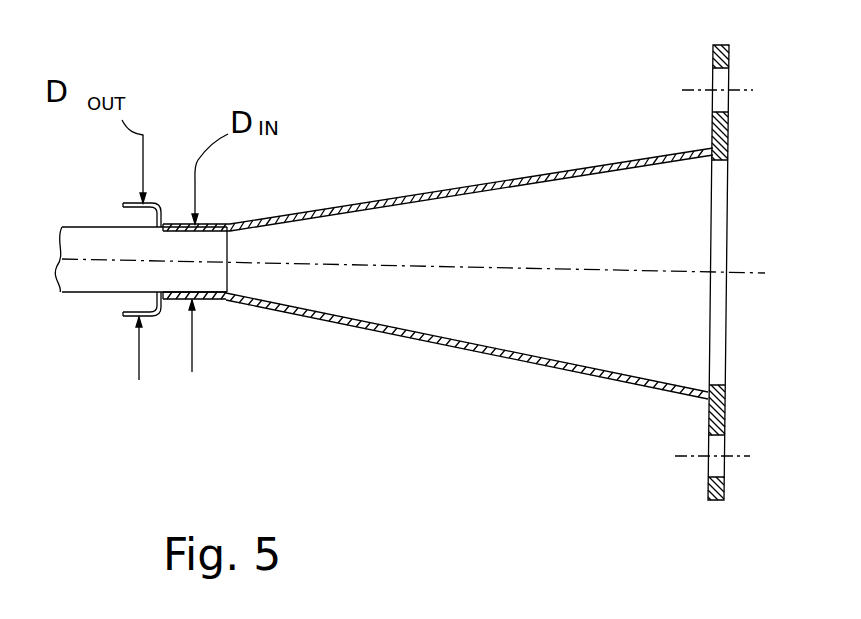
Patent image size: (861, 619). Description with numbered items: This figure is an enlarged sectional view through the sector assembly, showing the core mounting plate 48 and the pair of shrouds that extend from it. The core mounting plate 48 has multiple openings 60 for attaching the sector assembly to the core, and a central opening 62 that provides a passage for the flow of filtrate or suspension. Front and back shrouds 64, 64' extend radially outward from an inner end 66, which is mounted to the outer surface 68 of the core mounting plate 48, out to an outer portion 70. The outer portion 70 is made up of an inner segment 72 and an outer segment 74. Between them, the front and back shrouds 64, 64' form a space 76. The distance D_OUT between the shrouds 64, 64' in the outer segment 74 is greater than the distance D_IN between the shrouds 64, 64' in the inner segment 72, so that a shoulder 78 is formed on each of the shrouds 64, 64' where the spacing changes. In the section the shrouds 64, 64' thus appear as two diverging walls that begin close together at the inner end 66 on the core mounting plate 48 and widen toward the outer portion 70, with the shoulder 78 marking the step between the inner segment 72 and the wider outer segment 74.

The core mounting plate 48 is at (711, 58).
The openings 60 is at (712, 100).
The central opening 62 is at (724, 234).
The front shroud 64 is at (471, 181).
The back shroud 64' is at (467, 348).
The inner end 66 is at (707, 390).
The outer surface 68 is at (707, 418).
The outer portion 70 is at (187, 100).
The inner segment 72 is at (208, 303).
The outer segment 74 is at (158, 318).
The space 76 is at (138, 245).
The shoulder 78 is at (152, 269).